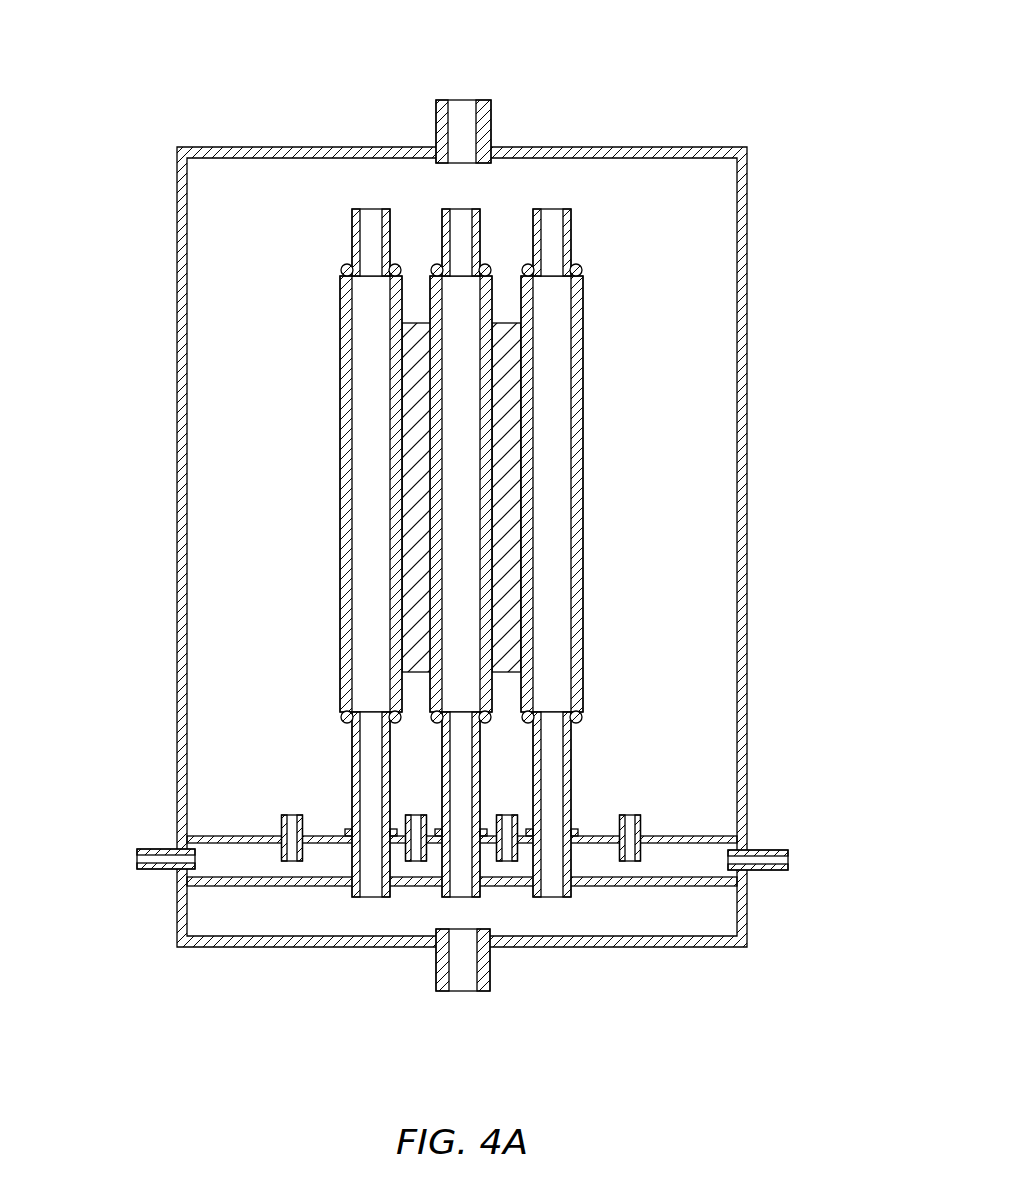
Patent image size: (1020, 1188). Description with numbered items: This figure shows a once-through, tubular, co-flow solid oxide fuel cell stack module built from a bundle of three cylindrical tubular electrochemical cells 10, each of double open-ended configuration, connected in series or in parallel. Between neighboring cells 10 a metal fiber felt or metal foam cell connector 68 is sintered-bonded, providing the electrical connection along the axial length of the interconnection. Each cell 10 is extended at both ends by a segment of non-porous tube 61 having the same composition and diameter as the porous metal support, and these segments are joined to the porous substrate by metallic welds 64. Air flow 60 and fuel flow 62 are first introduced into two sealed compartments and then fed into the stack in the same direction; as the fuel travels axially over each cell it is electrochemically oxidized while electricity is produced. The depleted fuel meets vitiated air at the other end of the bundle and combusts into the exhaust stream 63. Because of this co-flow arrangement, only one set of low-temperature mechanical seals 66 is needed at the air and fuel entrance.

The tubular electrochemical cell 10 is at (584, 492).
The air flow 60 is at (463, 1034).
The non-porous tube segment 61 is at (571, 240).
The fuel flow 62 is at (292, 808).
The exhaust stream 63 is at (463, 34).
The metallic weld 64 is at (579, 270).
The low-temperature mechanical seal 66 is at (700, 845).
The metal fiber felt or metal foam cell connector 68 is at (509, 672).